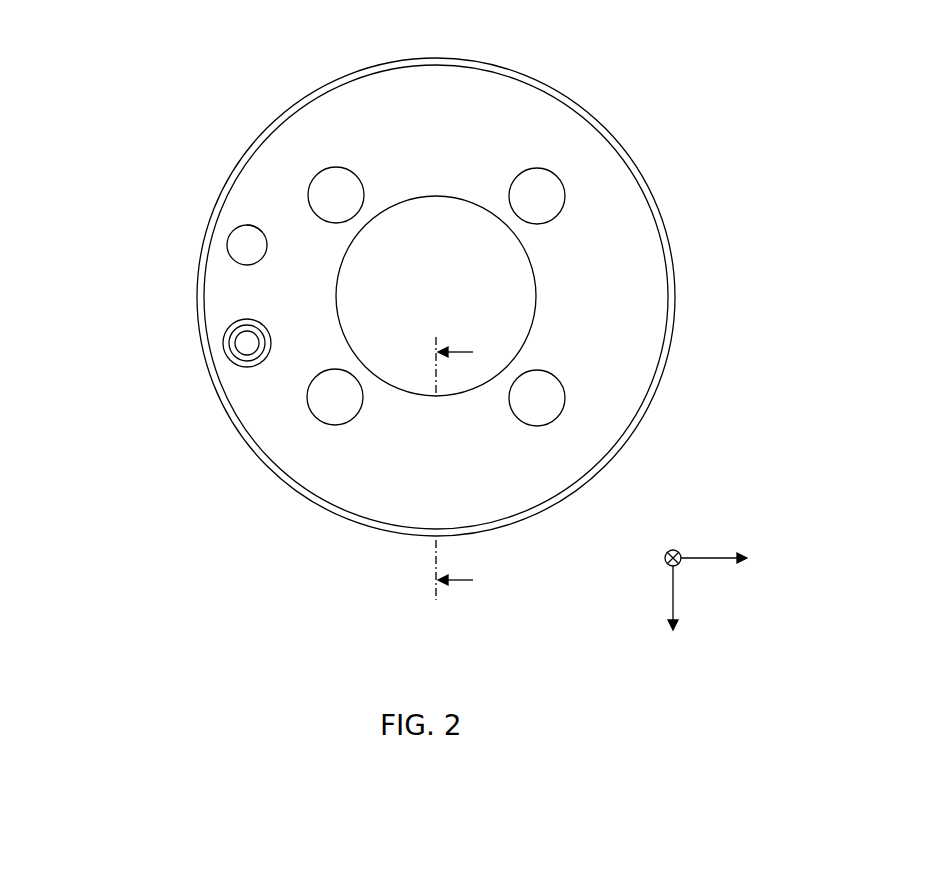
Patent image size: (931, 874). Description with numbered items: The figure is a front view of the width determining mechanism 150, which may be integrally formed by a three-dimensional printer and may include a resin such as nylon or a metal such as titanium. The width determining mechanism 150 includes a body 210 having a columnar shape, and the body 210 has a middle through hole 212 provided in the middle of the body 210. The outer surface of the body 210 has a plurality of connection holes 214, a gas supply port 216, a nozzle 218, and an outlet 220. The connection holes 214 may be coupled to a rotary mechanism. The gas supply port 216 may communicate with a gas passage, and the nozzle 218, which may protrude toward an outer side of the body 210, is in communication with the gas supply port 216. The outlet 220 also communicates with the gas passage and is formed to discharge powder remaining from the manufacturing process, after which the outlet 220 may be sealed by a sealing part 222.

The width determining mechanism 150 is at (273, 94).
The body 210 is at (572, 92).
The middle through hole 212 is at (438, 196).
The connection holes 214 is at (320, 196).
The gas supply port 216 is at (244, 350).
The nozzle 218 is at (250, 367).
The outlet 220 is at (238, 242).
The sealing part 222 is at (251, 240).